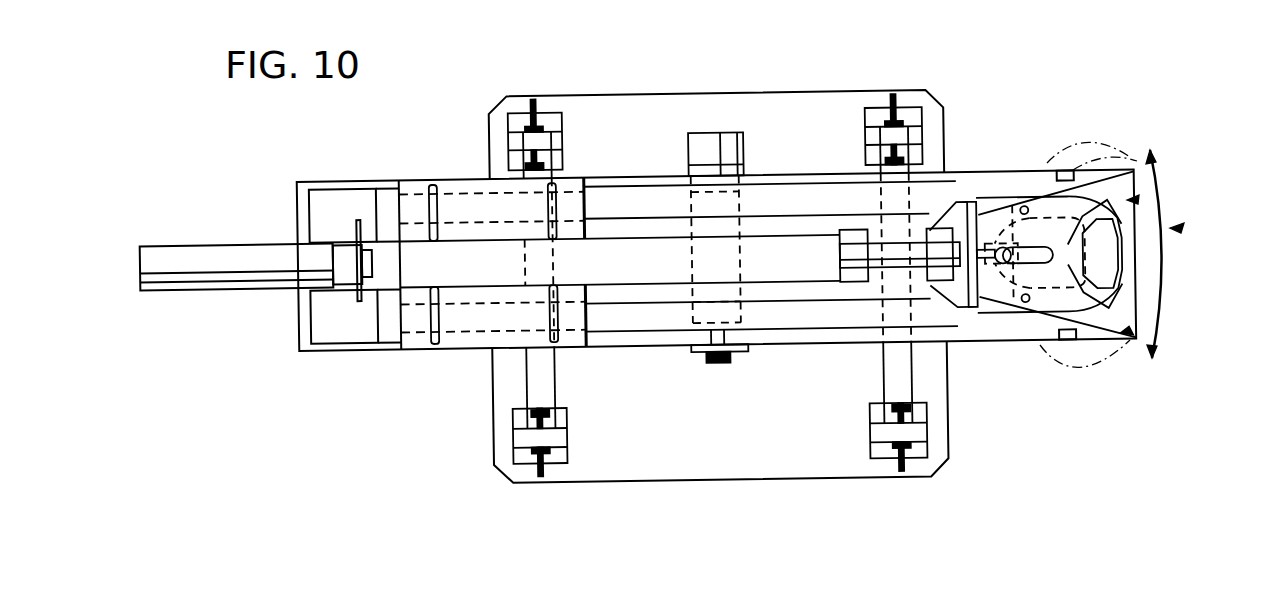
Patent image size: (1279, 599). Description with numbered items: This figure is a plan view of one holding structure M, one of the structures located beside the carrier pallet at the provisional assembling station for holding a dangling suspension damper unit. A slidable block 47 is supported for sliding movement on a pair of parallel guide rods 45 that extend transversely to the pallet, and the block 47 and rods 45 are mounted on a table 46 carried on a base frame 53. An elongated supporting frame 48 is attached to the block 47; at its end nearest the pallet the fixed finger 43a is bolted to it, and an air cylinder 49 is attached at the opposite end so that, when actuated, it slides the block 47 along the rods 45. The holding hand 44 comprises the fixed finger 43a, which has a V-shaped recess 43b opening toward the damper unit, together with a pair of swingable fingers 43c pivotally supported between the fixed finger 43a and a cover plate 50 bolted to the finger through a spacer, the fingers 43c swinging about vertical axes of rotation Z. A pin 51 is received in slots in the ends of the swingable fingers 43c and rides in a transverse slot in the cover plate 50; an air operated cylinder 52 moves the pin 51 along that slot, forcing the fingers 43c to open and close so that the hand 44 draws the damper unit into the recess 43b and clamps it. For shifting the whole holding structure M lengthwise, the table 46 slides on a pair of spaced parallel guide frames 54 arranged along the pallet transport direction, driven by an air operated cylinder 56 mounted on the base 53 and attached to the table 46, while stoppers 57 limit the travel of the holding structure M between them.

The fixed finger 43a is at (1122, 346).
The V-shaped recess 43b is at (1128, 200).
The swingable fingers 43c is at (1080, 135).
The holding hand 44 is at (1172, 228).
The guide rods 45 is at (785, 190).
The table 46 is at (797, 345).
The slidable block 47 is at (450, 187).
The supporting frame 48 is at (497, 280).
The air cylinder 49 is at (217, 252).
The cover plate 50 is at (1003, 220).
The pin 51 is at (1003, 258).
The air operated cylinder 52 is at (890, 245).
The base frame 53 is at (650, 466).
The guide frames 54 is at (533, 388).
The air operated cylinder 56 is at (690, 215).
The stoppers 57 is at (531, 100).
The holding structure M is at (977, 130).
The vertical axes of rotation Z is at (1025, 208).